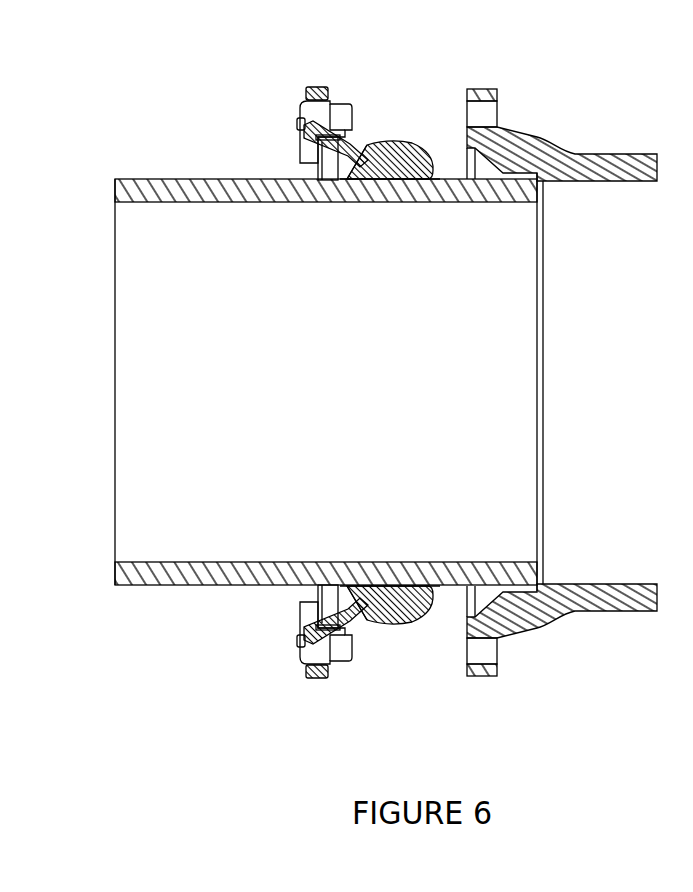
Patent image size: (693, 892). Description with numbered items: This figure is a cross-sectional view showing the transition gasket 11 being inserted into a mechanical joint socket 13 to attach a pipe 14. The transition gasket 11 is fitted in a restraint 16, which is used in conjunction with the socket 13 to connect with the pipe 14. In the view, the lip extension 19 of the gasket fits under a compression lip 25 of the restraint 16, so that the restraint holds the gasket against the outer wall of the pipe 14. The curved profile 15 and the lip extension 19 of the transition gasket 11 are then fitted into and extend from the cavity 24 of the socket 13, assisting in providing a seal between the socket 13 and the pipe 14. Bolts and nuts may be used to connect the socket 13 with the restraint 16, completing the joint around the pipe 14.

The transition gasket 11 is at (381, 179).
The mechanical joint socket 13 is at (523, 137).
The pipe 14 is at (233, 179).
The curved profile 15 is at (434, 167).
The restraint 16 is at (308, 87).
The lip extension 19 is at (360, 167).
The cavity 24 is at (483, 167).
The compression lip 25 is at (362, 150).